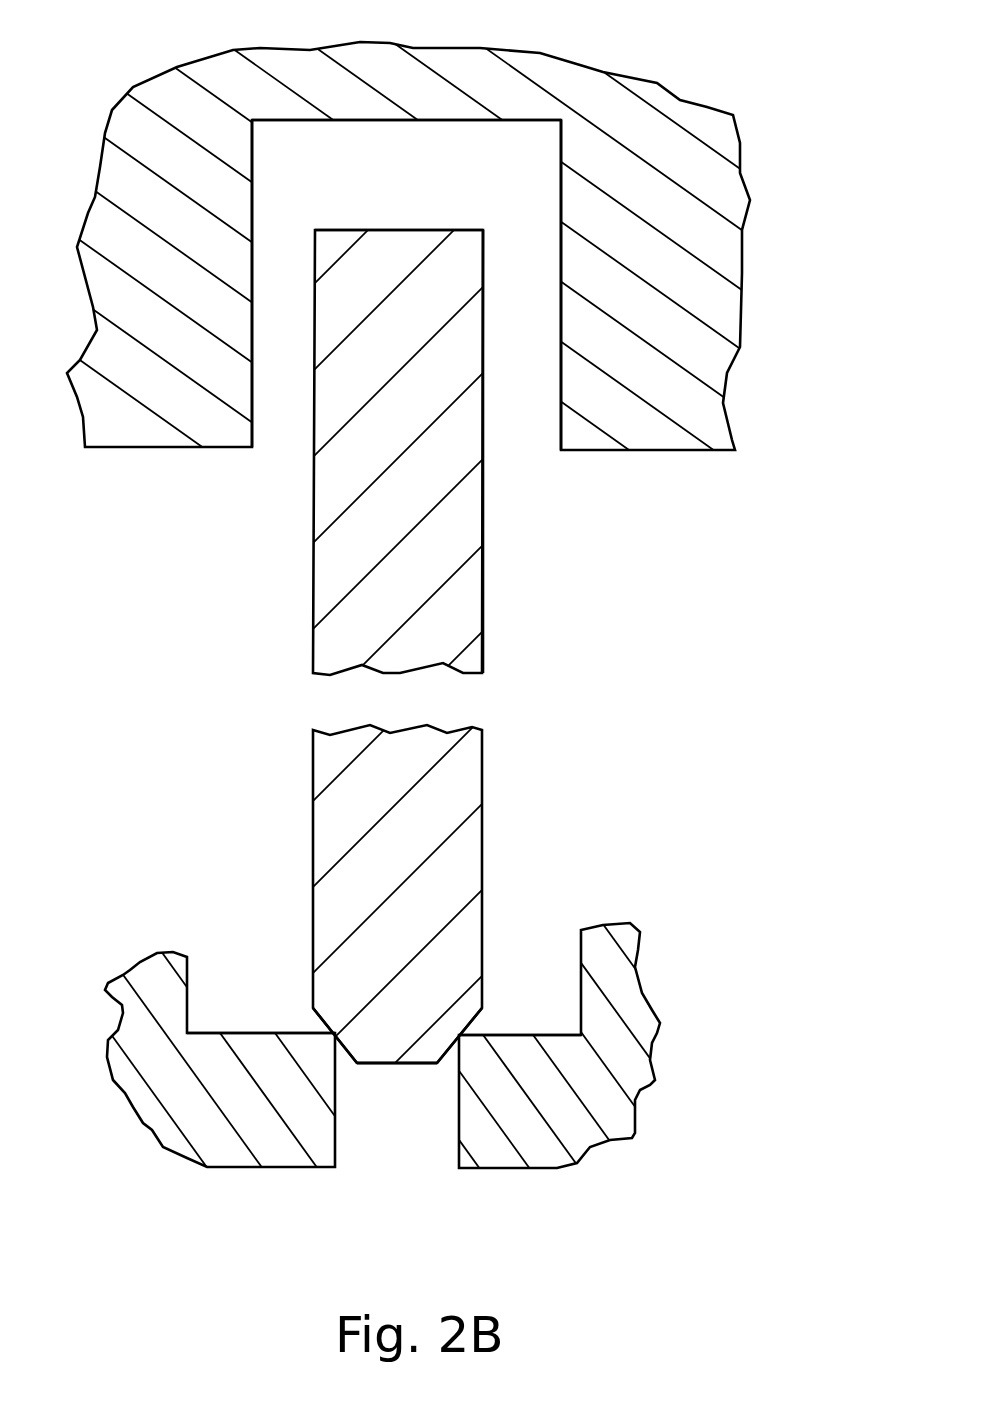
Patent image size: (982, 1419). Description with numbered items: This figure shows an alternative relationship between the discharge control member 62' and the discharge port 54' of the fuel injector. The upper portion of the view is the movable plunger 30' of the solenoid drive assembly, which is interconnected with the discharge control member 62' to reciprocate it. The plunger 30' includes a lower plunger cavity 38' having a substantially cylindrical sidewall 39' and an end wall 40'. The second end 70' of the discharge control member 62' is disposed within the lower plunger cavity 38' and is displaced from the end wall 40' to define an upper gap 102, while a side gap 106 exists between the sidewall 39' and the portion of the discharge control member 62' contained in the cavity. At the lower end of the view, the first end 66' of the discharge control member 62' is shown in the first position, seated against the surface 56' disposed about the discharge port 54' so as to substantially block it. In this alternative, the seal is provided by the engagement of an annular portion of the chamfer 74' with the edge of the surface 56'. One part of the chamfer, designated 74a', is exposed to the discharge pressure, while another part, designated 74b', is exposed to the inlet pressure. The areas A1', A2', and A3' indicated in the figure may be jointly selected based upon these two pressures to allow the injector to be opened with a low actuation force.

The plunger 30' is at (480, 421).
The lower plunger cavity 38' is at (141, 277).
The sidewall 39' is at (681, 237).
The end wall 40' is at (419, 68).
The discharge control member 62' is at (510, 585).
The second end 70' is at (259, 129).
The upper gap 102 is at (435, 200).
The side gap 106 is at (310, 363).
The area A3 A3' is at (550, 437).
The chamfer portion exposed to discharge pressure 74a' is at (625, 867).
The chamfer 74' is at (251, 955).
The chamfer portion exposed to inlet pressure 74b' is at (467, 1159).
The discharge port 54' is at (196, 1090).
The surface 56' is at (519, 971).
The first end 66' is at (634, 1049).
The area A2 A2' is at (192, 962).
The area A1 A1' is at (564, 1141).